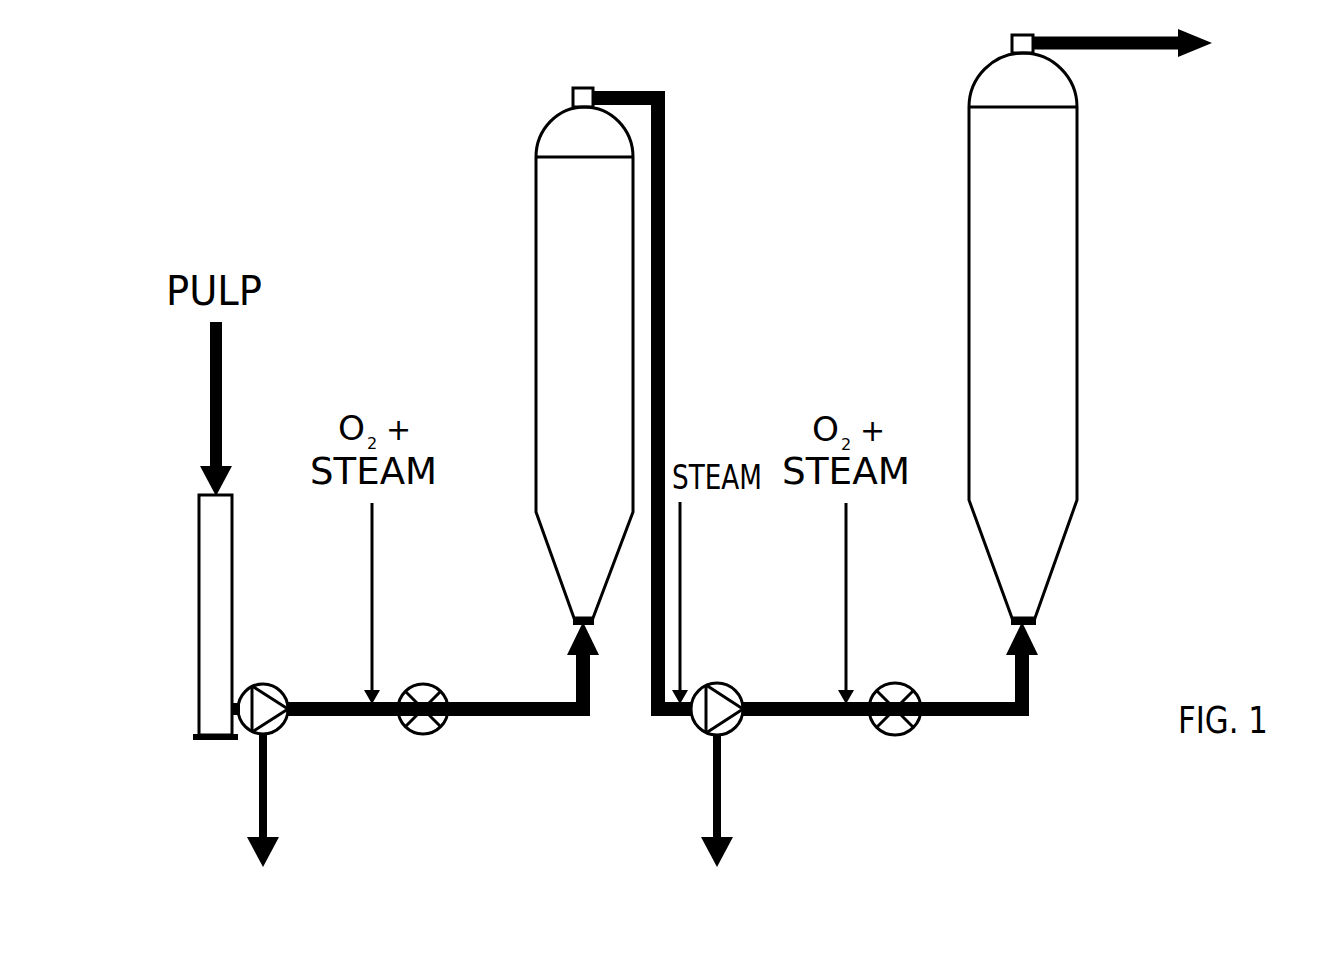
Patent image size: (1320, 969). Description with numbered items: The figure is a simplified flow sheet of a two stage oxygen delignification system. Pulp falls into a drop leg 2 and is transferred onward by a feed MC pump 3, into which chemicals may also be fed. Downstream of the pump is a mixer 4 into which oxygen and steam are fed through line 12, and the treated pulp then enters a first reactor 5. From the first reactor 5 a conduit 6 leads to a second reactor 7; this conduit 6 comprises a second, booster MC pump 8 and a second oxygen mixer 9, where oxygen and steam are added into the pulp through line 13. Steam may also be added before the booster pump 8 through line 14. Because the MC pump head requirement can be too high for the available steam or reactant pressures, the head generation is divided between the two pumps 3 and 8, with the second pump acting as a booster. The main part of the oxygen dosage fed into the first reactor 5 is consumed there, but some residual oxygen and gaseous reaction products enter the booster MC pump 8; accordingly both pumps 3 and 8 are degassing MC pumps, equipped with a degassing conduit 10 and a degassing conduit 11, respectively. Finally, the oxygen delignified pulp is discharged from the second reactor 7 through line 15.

The drop leg 2 is at (232, 640).
The feed MC pump 3 is at (278, 682).
The mixer 4 is at (428, 683).
The first reactor 5 is at (535, 283).
The conduit 6 is at (670, 320).
The second reactor 7 is at (969, 165).
The second (booster) MC pump 8 is at (733, 682).
The second oxygen mixer 9 is at (903, 687).
The degassing conduit 10 is at (268, 800).
The degassing conduit 11 is at (722, 778).
The line 12 is at (375, 607).
The line 13 is at (848, 590).
The line 14 is at (683, 608).
The line 15 is at (1127, 50).